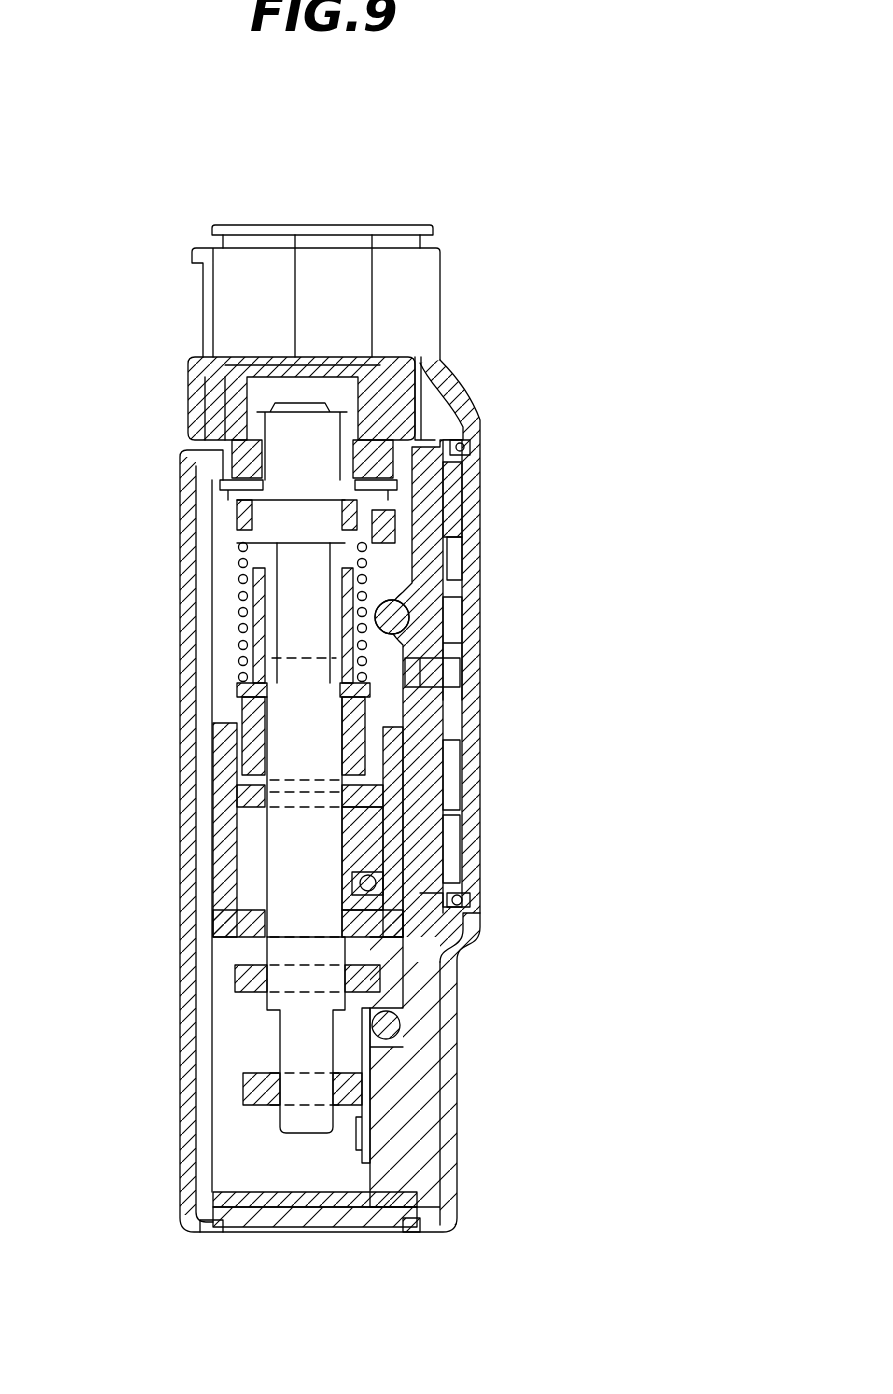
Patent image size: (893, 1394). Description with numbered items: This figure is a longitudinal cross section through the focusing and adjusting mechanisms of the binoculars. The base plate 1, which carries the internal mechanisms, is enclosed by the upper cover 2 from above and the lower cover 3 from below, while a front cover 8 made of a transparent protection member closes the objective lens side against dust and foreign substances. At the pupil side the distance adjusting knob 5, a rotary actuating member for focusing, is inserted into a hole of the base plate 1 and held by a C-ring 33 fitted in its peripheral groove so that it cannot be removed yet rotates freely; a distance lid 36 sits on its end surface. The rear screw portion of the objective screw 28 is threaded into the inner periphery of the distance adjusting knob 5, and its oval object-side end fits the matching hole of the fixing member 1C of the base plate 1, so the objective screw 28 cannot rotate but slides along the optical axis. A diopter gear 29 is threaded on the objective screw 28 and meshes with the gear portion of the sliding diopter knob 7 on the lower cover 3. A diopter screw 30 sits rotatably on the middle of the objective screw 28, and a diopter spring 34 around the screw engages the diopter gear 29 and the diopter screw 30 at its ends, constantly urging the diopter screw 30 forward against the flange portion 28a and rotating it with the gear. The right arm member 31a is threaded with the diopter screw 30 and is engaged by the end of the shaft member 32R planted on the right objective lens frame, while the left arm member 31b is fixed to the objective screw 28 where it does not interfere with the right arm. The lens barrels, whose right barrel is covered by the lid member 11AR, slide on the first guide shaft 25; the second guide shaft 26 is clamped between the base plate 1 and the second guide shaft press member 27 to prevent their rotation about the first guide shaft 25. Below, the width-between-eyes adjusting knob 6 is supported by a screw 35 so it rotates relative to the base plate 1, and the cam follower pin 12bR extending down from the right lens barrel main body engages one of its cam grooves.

The base plate 1 is at (407, 1137).
The fixing member 1C is at (243, 1097).
The upper cover 2 is at (195, 1128).
The lower cover 3 is at (447, 1077).
The distance adjusting knob 5 is at (188, 395).
The width-between-eyes adjusting knob 6 is at (480, 555).
The diopter knob 7 is at (440, 503).
The front cover 8 is at (282, 1213).
The lid member 11AR is at (200, 1177).
The cam follower pin 12bR is at (407, 598).
The first guide shaft 25 is at (408, 612).
The second guide shaft 26 is at (400, 988).
The second guide shaft press member 27 is at (372, 1052).
The objective screw 28 is at (290, 1018).
The flange portion 28a is at (240, 790).
The diopter gear 29 is at (237, 515).
The diopter screw 30 is at (252, 712).
The right arm member 31a is at (410, 795).
The left arm member 31b is at (235, 975).
The shaft member 32R is at (372, 876).
The C-ring 33 is at (220, 486).
The diopter spring 34 is at (235, 640).
The screw 35 is at (458, 672).
The distance lid 36 is at (350, 368).